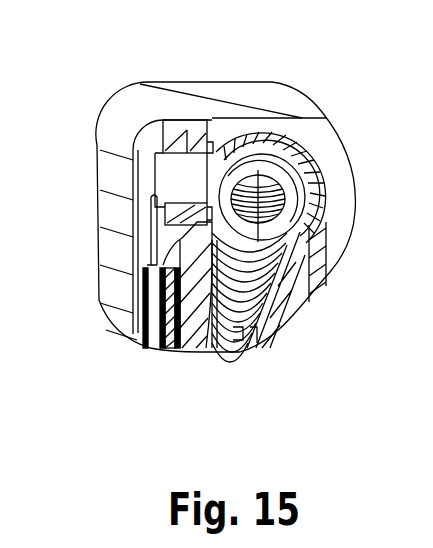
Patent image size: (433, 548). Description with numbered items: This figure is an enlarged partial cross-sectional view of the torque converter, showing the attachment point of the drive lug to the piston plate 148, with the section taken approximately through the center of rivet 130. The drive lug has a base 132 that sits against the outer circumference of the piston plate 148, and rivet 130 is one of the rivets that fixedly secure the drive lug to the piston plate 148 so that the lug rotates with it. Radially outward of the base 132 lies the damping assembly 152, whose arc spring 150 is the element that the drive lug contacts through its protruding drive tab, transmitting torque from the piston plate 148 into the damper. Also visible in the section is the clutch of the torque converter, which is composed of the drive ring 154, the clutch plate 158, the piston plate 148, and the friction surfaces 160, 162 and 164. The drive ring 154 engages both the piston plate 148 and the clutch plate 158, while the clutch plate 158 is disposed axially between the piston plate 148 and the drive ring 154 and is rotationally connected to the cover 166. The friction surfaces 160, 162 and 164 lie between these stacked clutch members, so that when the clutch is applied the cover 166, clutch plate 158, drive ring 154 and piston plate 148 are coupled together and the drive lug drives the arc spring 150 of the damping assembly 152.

The piston plate 148 is at (163, 130).
The cover 166 is at (190, 87).
The base 132 is at (215, 153).
The rivet 130 is at (168, 175).
The drive ring 154 is at (163, 252).
The damping assembly 152 is at (300, 150).
The arc spring 150 is at (297, 200).
The friction surface 164 is at (183, 350).
The friction surface 160 is at (145, 350).
The friction surface 162 is at (163, 350).
The clutch plate 158 is at (173, 350).